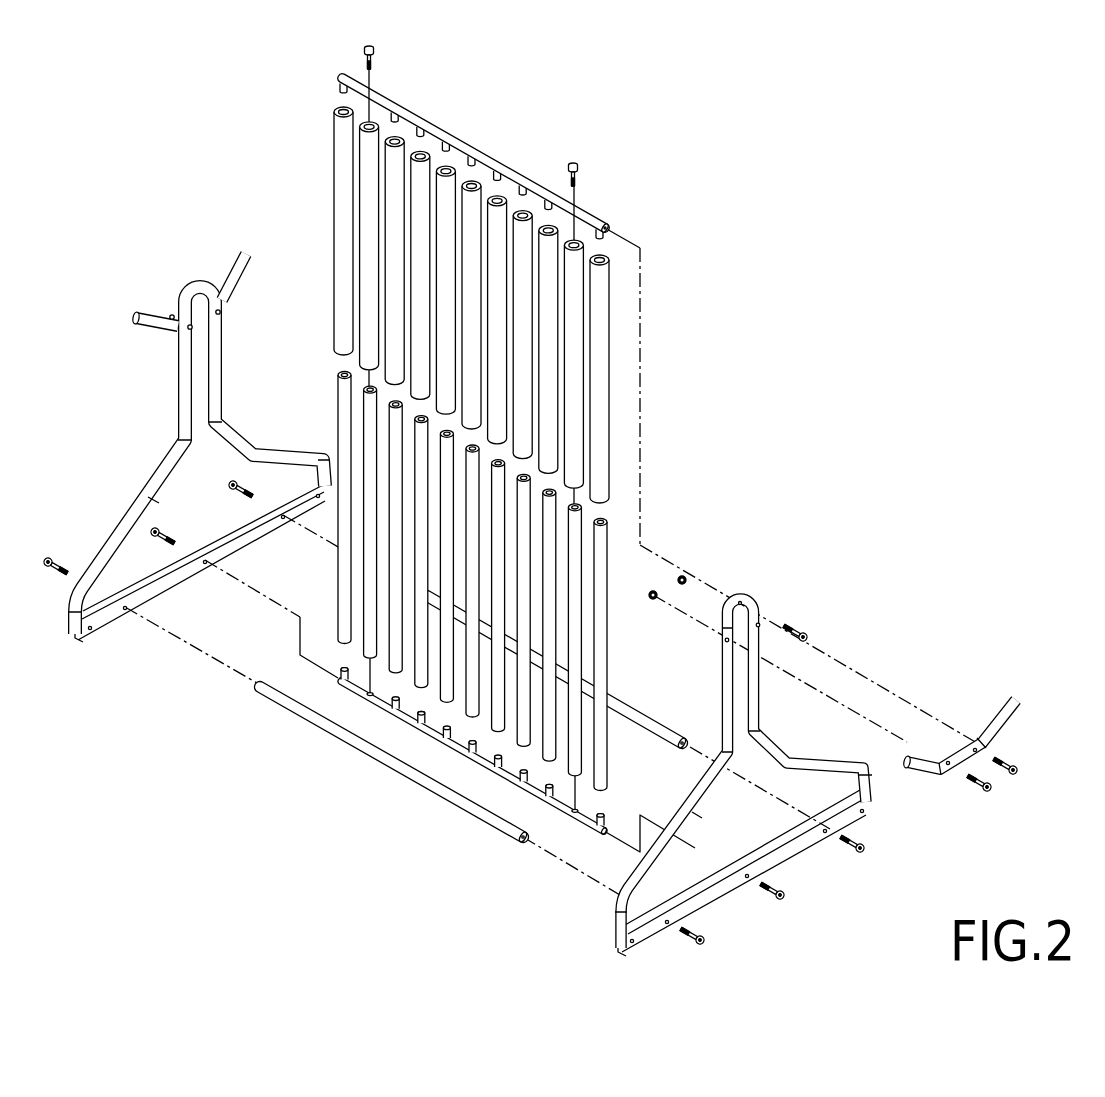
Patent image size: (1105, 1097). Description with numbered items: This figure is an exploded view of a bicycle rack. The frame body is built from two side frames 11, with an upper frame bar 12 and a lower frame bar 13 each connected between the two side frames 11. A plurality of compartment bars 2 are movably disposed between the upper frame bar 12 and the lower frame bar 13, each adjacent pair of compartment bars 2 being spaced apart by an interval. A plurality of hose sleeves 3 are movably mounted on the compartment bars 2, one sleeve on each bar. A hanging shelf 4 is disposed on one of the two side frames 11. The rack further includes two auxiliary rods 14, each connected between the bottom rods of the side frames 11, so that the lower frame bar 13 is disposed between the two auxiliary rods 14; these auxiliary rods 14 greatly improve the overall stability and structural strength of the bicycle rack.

The compartment bar 2 is at (340, 408).
The hose sleeve 3 is at (340, 145).
The hanging shelf 4 is at (1028, 721).
The side frame 11 is at (886, 803).
The upper frame bar 12 is at (490, 160).
The lower frame bar 13 is at (580, 820).
The auxiliary rod 14 is at (375, 752).